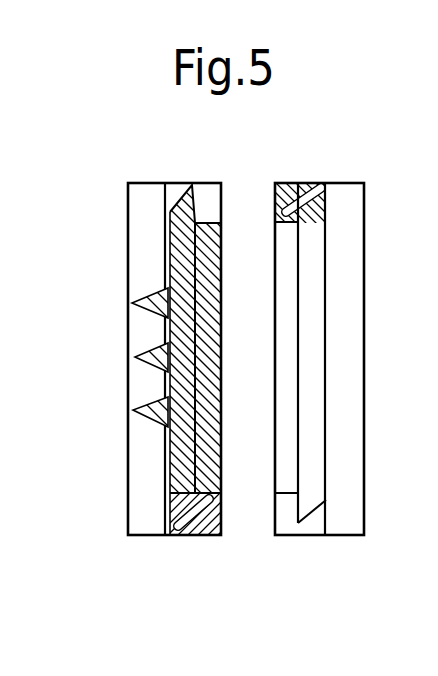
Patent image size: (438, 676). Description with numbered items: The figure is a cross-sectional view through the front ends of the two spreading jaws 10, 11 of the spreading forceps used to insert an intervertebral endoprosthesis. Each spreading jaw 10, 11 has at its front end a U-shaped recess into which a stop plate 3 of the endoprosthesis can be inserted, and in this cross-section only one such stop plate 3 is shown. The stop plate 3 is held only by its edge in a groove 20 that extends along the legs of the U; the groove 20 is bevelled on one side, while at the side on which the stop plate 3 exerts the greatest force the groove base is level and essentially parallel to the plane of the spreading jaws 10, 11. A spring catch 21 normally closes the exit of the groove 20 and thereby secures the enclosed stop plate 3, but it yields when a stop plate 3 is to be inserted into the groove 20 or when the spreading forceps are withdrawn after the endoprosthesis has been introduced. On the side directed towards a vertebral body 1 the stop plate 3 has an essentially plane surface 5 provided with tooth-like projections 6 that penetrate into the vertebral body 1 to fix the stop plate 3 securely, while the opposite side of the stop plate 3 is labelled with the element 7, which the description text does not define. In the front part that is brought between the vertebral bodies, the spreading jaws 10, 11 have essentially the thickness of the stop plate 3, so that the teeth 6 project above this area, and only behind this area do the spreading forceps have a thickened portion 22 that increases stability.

The vertebral body 1 is at (308, 500).
The stop plate 3 is at (188, 443).
The plane surface 5 is at (171, 250).
The tooth-like projections 6 is at (133, 303).
The seal base 7 is at (196, 338).
The spreading jaw 10 is at (126, 546).
The spreading jaw 11 is at (374, 541).
The groove 20 is at (300, 194).
The spring catch 21 is at (310, 225).
The thickened portion 22 is at (143, 196).